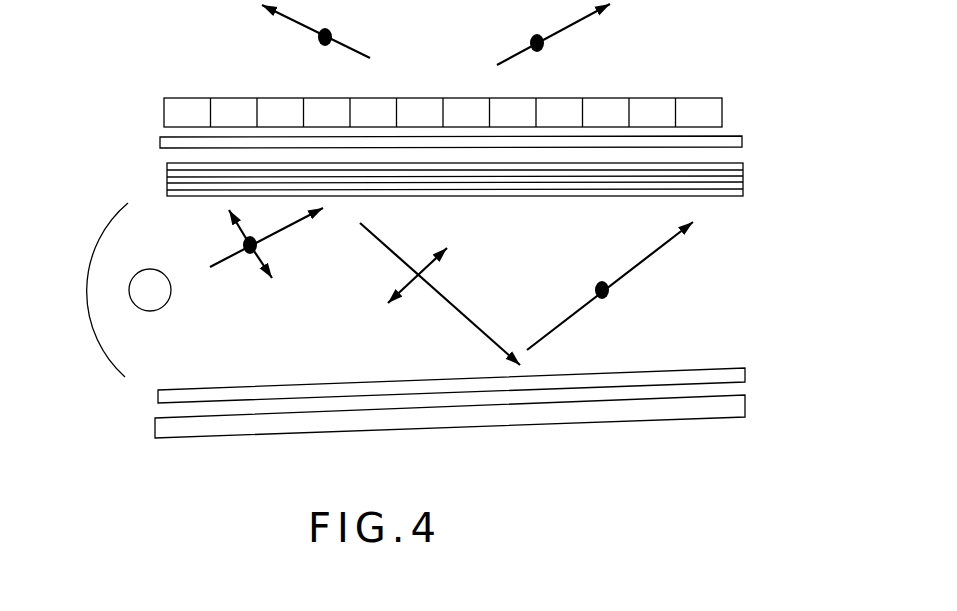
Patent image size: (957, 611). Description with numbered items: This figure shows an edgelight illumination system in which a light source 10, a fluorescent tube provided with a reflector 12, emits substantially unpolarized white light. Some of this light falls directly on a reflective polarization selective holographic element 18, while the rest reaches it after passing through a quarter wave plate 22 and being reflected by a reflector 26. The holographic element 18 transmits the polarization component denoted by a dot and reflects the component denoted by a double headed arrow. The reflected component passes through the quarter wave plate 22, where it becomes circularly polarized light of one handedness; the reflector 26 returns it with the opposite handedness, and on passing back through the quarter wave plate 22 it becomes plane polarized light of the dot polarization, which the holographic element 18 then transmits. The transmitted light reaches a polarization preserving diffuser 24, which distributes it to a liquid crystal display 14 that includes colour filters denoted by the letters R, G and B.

The light source 10 is at (147, 293).
The reflector 12 is at (97, 252).
The liquid crystal display 14 is at (623, 102).
The reflective polarization selective holographic element 18 is at (421, 105).
The quarter wave plate 22 is at (713, 377).
The polarization preserving diffuser 24 is at (732, 140).
The reflector 26 is at (622, 412).